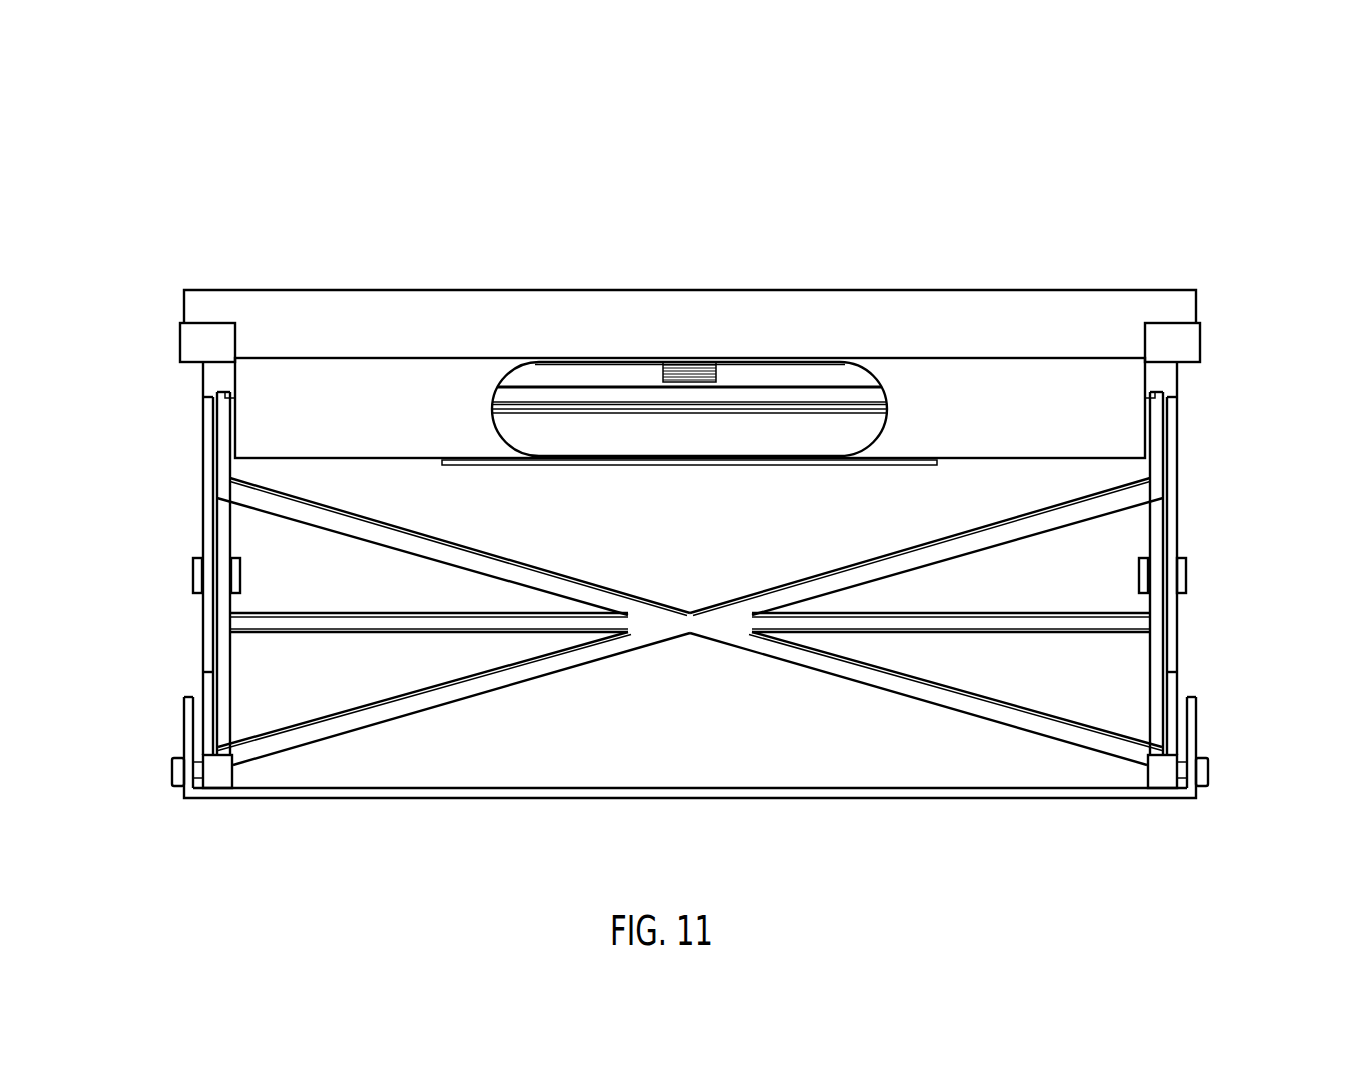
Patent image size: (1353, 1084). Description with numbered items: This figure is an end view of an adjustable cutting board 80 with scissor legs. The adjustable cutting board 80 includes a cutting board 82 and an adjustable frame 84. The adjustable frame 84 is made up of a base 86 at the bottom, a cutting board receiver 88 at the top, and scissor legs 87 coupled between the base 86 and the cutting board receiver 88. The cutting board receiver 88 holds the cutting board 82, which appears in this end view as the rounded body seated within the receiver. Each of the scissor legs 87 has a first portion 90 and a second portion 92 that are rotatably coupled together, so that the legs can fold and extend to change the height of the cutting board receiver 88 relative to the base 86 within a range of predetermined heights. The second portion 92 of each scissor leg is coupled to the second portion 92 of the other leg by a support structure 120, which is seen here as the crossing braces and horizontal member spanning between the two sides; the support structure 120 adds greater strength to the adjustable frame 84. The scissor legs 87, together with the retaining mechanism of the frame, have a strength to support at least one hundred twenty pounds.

The adjustable cutting board 80 is at (525, 200).
The cutting board 82 is at (687, 318).
The adjustable frame 84 is at (1265, 388).
The base 86 is at (187, 732).
The scissor legs 87 is at (162, 575).
The cutting board receiver 88 is at (983, 397).
The first portion 90 is at (203, 479).
The second portion 92 is at (222, 670).
The support structure 120 is at (727, 628).